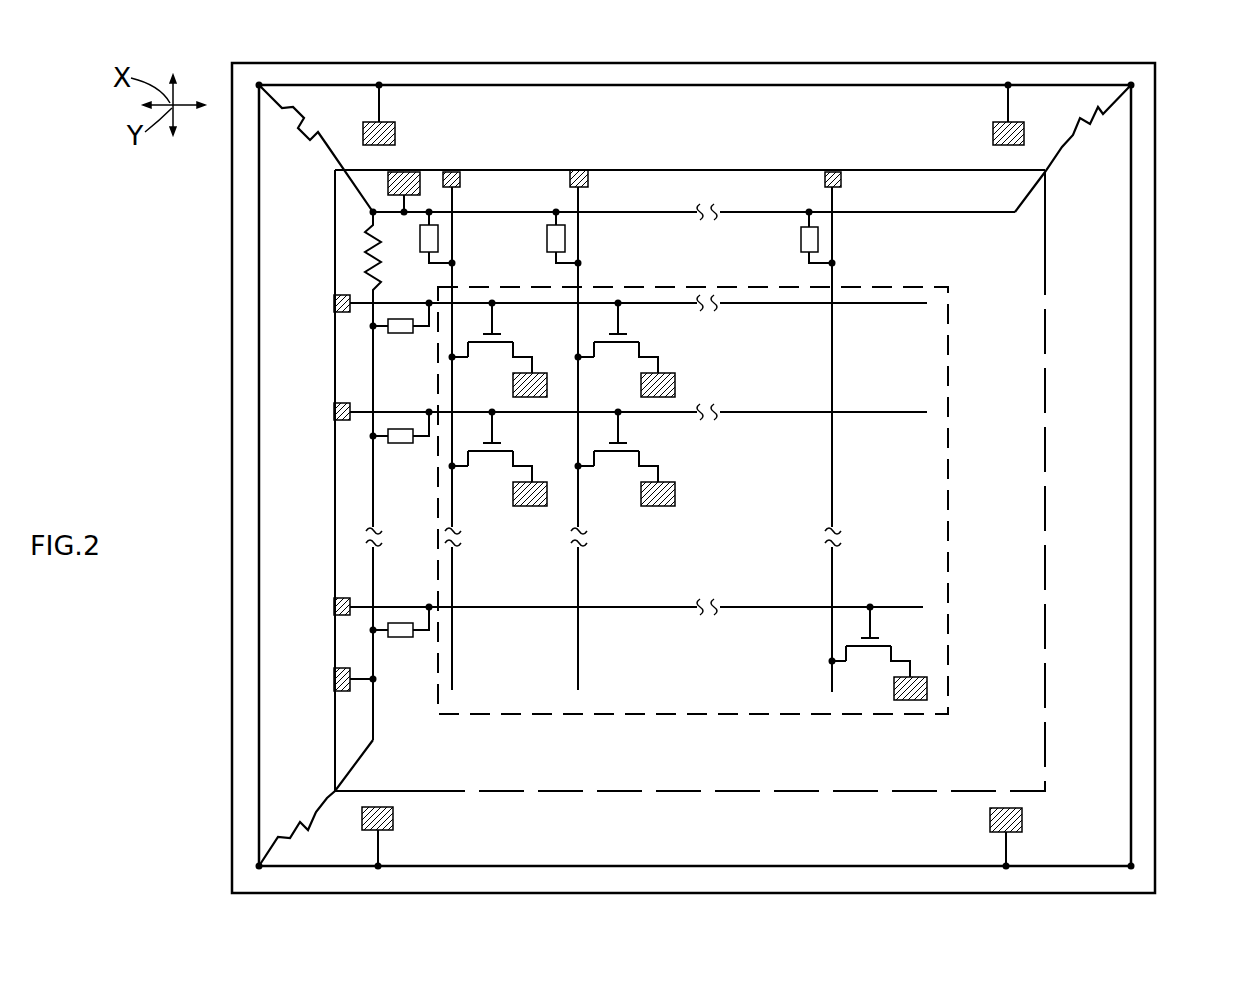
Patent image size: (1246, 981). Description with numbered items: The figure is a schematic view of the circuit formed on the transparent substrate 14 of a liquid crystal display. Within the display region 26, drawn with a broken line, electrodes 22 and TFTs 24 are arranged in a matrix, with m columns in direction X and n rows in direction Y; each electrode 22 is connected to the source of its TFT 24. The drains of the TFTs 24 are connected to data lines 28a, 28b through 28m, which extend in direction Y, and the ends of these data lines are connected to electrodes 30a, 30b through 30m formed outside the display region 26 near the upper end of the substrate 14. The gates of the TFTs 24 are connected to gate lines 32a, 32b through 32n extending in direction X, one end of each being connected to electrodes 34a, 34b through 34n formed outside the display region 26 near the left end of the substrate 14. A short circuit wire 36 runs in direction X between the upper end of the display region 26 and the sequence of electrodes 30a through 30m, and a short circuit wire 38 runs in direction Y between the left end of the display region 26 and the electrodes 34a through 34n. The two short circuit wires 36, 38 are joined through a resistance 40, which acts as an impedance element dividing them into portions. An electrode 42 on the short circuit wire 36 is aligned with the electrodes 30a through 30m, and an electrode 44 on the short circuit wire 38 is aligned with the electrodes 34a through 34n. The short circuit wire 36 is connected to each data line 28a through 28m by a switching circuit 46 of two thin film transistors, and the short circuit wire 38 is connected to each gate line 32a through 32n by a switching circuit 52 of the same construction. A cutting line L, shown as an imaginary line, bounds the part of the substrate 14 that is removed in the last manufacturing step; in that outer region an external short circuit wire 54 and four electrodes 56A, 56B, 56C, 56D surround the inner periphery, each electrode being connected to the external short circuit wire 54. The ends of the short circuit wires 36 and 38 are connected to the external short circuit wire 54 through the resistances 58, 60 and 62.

The transparent substrate 14 is at (1156, 172).
The electrodes 22 is at (513, 385).
The TFT 24 is at (505, 340).
The display region 26 is at (950, 477).
The data line 28a is at (456, 200).
The data line 28b is at (582, 205).
The data line 28m is at (838, 205).
The electrode 30a is at (455, 172).
The electrode 30b is at (582, 170).
The electrode 30m is at (830, 172).
The gate line 32a is at (363, 305).
The gate line 32b is at (363, 414).
The gate line 32n is at (363, 607).
The electrode 34a is at (338, 304).
The electrode 34b is at (338, 413).
The electrode 34n is at (338, 612).
The short circuit wire 36 is at (610, 212).
The short circuit wire 38 is at (373, 572).
The resistance 40 is at (370, 237).
The electrode 42 is at (408, 172).
The electrode 44 is at (333, 680).
The switching circuit 46 is at (422, 246).
The switching circuit 52 is at (393, 334).
The external short circuit wire 54 is at (1132, 497).
The electrode 56A is at (393, 818).
The electrode 56B is at (990, 820).
The electrode 56C is at (363, 142).
The electrode 56D is at (993, 133).
The resistance 58 is at (1085, 145).
The resistance 60 is at (293, 115).
The resistance 62 is at (288, 822).
The cutting line L is at (1046, 358).